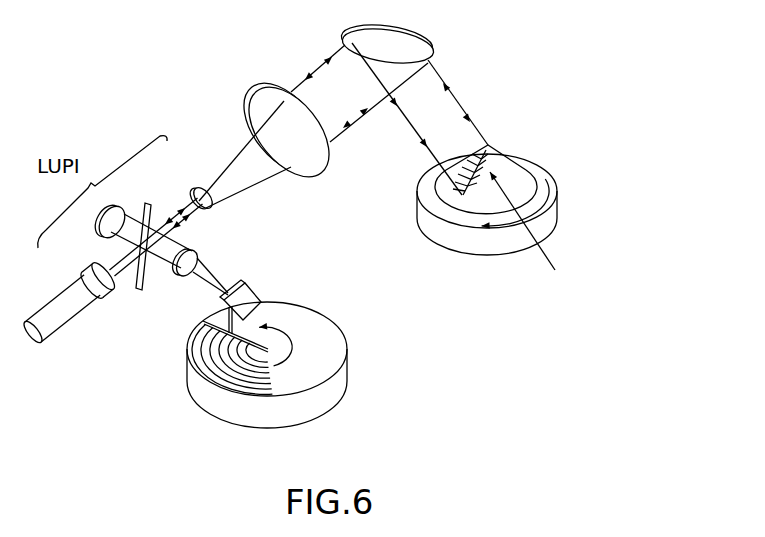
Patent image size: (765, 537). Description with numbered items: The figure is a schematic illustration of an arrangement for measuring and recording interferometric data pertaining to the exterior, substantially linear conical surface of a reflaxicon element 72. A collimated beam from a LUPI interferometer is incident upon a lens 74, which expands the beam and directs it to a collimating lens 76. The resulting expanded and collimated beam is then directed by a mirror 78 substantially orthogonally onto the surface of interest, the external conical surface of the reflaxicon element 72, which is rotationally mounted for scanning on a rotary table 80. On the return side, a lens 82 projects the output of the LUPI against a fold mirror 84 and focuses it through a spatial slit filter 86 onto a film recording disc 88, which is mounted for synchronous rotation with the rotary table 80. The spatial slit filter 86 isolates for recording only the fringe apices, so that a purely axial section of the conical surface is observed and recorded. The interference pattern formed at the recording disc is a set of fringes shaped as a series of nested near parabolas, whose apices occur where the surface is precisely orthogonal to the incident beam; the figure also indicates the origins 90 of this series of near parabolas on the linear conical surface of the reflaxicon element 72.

The reflaxicon element 72 is at (494, 147).
The lens 74 is at (212, 206).
The collimating lens 76 is at (318, 170).
The mirror 78 is at (433, 43).
The rotary table 80 is at (556, 218).
The lens 82 is at (199, 257).
The fold mirror 84 is at (261, 301).
The spatial slit filter 86 is at (210, 320).
The film recording disc 88 is at (333, 359).
The origins 90 is at (530, 233).